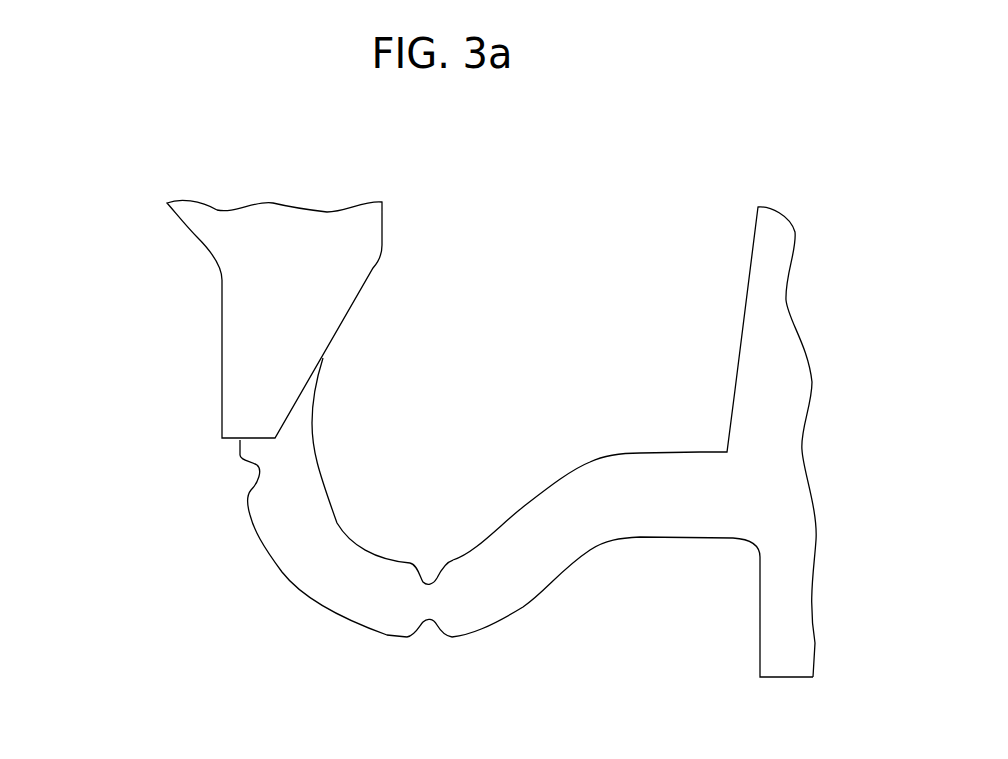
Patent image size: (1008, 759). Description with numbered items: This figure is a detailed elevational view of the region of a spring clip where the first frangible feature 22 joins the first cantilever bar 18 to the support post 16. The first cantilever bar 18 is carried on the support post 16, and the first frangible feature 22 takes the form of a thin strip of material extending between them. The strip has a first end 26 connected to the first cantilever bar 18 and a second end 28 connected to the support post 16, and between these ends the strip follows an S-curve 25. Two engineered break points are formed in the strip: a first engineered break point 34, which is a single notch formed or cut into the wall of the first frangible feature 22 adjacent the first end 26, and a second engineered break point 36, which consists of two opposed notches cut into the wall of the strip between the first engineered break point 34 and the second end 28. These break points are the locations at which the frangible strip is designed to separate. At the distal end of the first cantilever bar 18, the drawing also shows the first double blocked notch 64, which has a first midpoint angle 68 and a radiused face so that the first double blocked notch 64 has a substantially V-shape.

The support post 16 is at (762, 302).
The first cantilever bar 18 is at (267, 322).
The first frangible feature 22 is at (533, 520).
The S-curves 25 is at (554, 656).
The first end 26 is at (715, 450).
The second end 28 is at (303, 420).
The first engineered break point 34 is at (258, 473).
The second engineered break point 36 is at (430, 580).
The first double blocked notch 64 is at (168, 302).
The first midpoint angle 68 is at (217, 267).